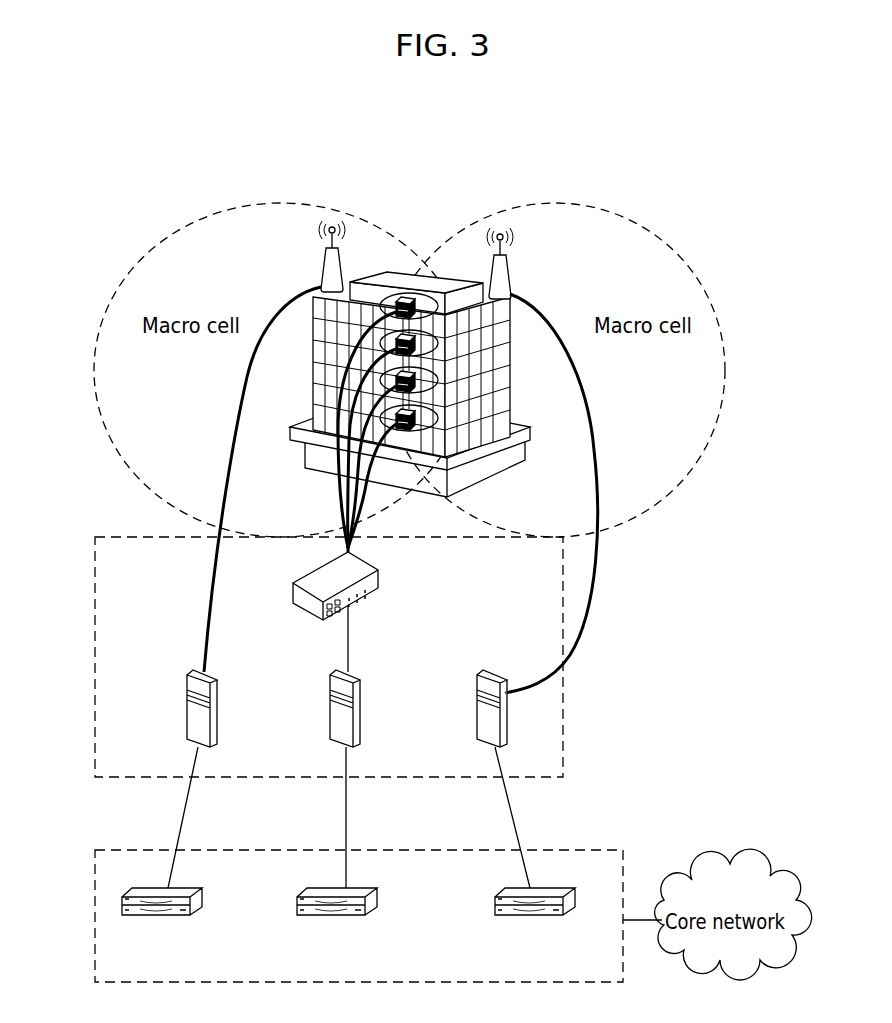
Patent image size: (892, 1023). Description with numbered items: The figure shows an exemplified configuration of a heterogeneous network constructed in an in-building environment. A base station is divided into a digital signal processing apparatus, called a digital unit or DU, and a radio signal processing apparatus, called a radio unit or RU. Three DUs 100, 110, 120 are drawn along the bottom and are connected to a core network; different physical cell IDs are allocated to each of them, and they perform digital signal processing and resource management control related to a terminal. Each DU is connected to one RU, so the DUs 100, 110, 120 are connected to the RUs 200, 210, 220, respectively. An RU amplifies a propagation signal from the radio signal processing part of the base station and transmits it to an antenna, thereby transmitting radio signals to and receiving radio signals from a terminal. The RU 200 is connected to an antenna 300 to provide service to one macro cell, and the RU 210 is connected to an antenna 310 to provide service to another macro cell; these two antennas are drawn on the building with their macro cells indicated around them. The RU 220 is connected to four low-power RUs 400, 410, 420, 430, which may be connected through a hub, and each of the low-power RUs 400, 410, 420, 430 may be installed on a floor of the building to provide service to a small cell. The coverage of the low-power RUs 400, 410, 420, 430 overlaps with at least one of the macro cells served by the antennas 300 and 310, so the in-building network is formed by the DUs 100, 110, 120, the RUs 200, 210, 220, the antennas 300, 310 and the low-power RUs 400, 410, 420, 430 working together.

The digital unit 100 is at (158, 917).
The digital unit 110 is at (533, 917).
The digital unit 120 is at (333, 917).
The radio unit 200 is at (187, 702).
The radio unit 210 is at (477, 702).
The radio unit 220 is at (330, 702).
The antenna 300 is at (320, 269).
The antenna 310 is at (512, 274).
The low-power RU 400 is at (404, 293).
The low-power RU 410 is at (438, 345).
The low-power RU 420 is at (438, 383).
The low-power RU 430 is at (408, 432).